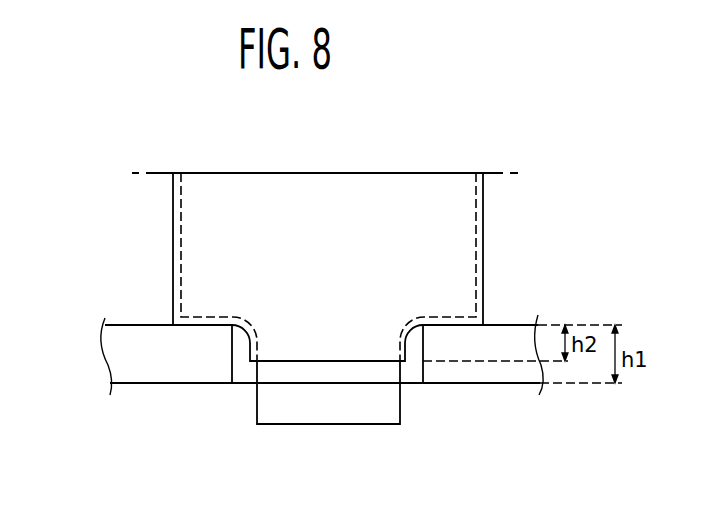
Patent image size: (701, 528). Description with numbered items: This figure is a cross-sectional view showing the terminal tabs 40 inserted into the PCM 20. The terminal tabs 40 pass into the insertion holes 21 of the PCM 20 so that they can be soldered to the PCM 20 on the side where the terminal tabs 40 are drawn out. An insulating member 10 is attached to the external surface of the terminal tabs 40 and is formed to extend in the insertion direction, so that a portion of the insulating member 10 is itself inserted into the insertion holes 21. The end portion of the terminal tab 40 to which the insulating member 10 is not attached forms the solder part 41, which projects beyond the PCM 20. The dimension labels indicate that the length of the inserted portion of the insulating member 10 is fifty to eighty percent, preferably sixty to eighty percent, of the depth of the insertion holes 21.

The insulating member 10 is at (480, 211).
The terminal tabs 40 is at (417, 270).
The solder part 41 is at (400, 400).
The PCM 20 is at (124, 354).
The insertion holes 21 is at (242, 373).